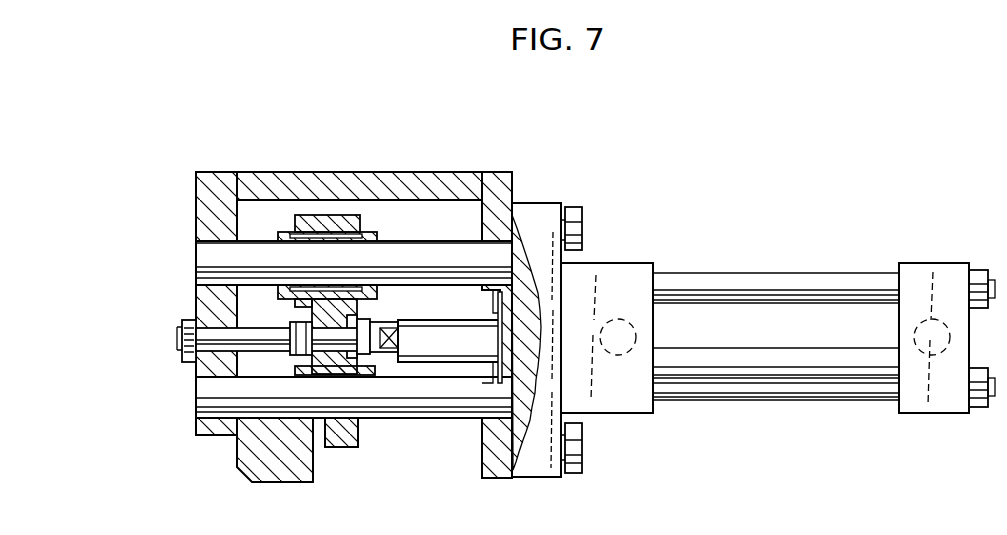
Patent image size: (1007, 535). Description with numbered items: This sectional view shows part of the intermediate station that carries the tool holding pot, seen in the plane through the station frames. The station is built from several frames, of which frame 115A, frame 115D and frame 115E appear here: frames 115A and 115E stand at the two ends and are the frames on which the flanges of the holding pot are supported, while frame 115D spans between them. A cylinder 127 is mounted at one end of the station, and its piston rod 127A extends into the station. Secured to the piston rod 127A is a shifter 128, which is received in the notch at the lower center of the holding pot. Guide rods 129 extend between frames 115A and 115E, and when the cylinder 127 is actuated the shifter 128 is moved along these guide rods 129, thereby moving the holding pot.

The frame 115A is at (207, 195).
The frame 115D is at (420, 177).
The frame 115E is at (500, 195).
The cylinder 127 is at (807, 357).
The piston rod 127A is at (213, 333).
The shifter 128 is at (345, 448).
The guide rods 129 is at (205, 258).